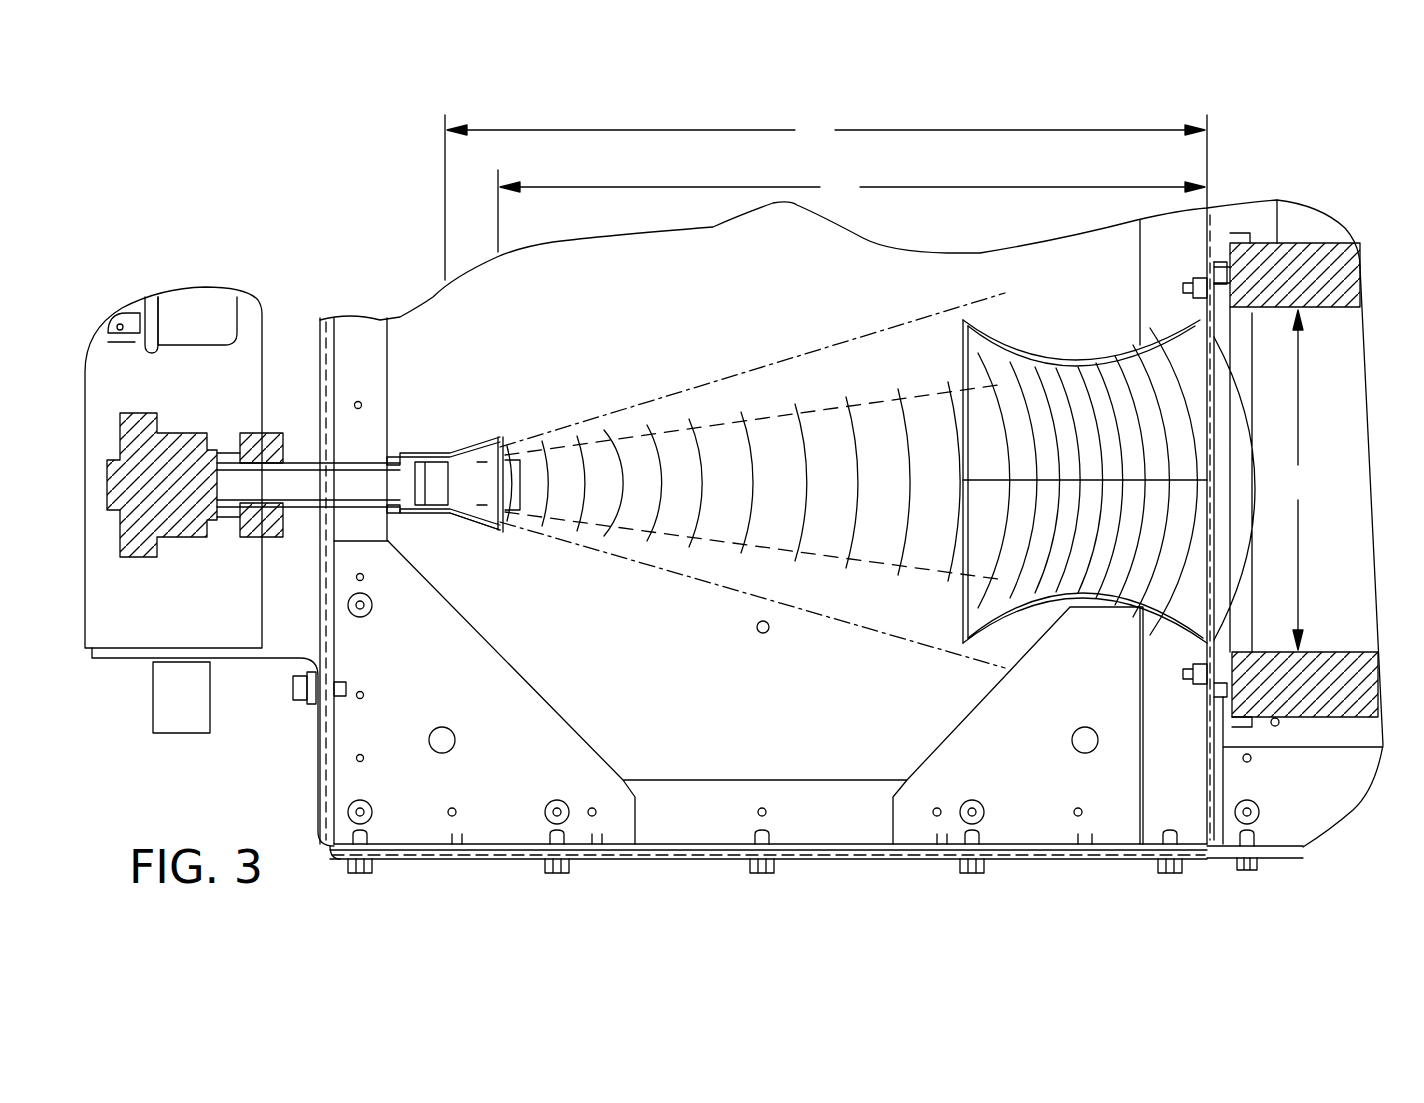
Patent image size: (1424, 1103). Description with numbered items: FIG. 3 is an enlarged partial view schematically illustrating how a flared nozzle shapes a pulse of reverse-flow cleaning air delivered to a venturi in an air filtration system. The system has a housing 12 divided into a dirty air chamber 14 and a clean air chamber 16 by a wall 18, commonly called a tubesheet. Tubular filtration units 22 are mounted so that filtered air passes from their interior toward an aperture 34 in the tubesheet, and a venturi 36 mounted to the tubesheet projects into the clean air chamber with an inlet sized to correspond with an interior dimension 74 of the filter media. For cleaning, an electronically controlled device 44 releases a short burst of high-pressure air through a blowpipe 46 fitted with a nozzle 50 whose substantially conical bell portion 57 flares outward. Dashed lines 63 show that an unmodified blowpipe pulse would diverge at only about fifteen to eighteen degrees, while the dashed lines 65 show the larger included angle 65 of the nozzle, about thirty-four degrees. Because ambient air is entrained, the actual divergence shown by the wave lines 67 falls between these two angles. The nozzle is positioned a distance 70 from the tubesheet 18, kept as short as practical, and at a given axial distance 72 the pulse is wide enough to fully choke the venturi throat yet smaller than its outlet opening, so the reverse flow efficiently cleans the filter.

The housing 12 is at (1108, 860).
The dirty air chamber 14 is at (1322, 226).
The clean air chamber 16 is at (430, 316).
The wall 18 is at (1216, 232).
The filtration units 22 is at (1345, 293).
The aperture 34 is at (1196, 618).
The venturi 36 is at (1064, 358).
The electronically controlled device 44 is at (140, 694).
The blowpipe 46 is at (347, 482).
The blowpipe nozzle 50 is at (428, 453).
The bell portion 57 is at (480, 530).
The dashed lines 63 is at (812, 410).
The included angle 65 is at (838, 348).
The wave lines 67 is at (773, 526).
The distance 70 is at (851, 211).
The axial distance 72 is at (825, 197).
The interior dimension 74 is at (1298, 480).